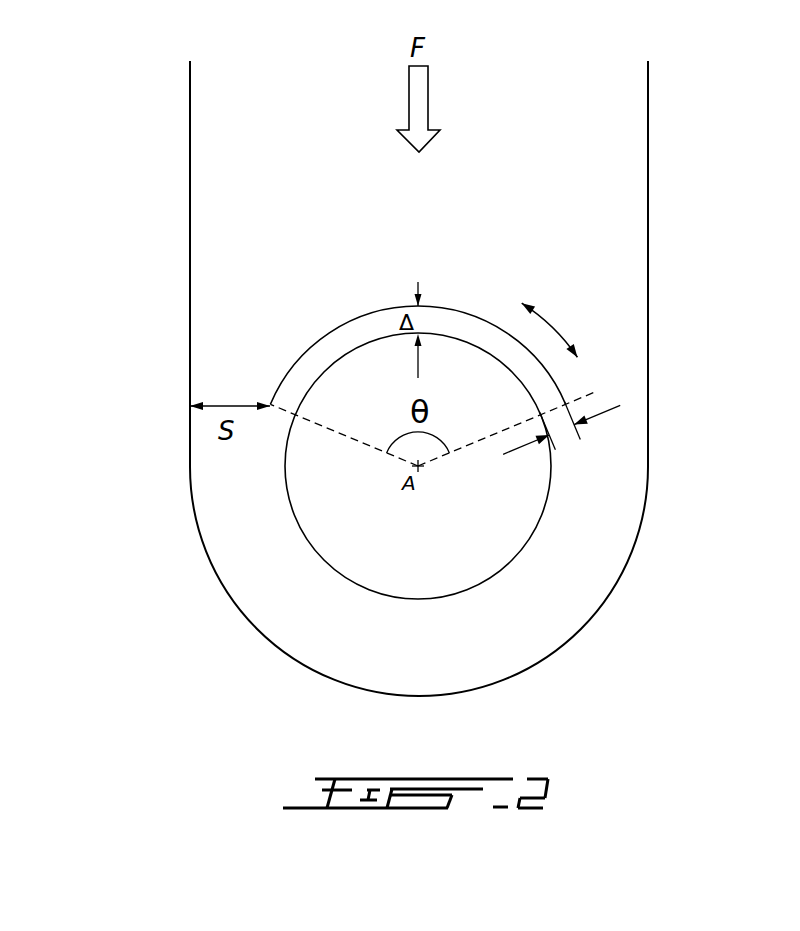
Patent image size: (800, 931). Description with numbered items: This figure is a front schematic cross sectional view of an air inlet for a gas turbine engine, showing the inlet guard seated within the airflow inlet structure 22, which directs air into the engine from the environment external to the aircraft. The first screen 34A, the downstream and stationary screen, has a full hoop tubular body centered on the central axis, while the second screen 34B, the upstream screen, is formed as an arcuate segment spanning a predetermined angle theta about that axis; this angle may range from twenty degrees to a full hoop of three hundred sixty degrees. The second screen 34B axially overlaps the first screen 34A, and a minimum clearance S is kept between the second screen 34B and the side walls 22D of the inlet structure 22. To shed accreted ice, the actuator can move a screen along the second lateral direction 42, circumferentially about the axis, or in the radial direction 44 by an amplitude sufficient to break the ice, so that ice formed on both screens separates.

The airflow inlet structure 22 is at (126, 97).
The side walls 22D is at (190, 207).
The first screen 34A is at (295, 515).
The second screen 34B is at (320, 338).
The second lateral direction 42 is at (553, 324).
The radial direction 44 is at (561, 436).